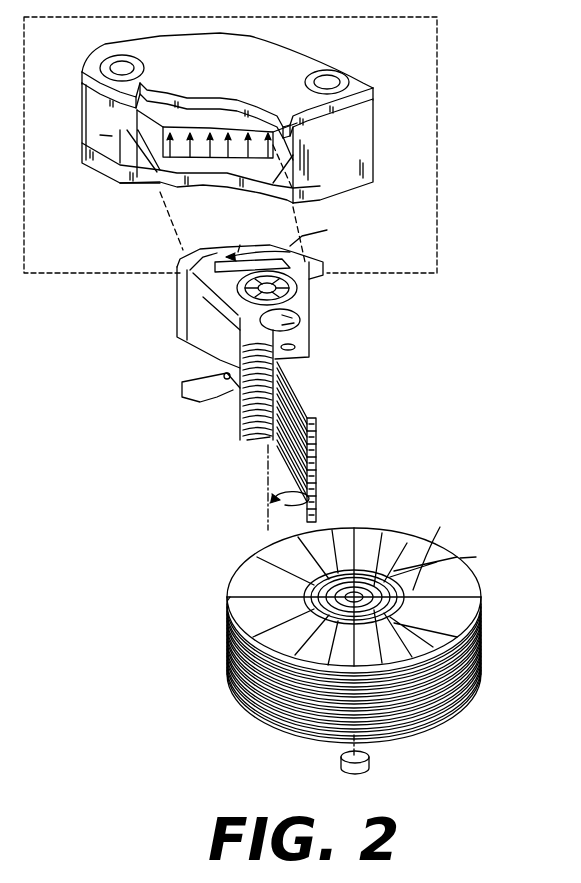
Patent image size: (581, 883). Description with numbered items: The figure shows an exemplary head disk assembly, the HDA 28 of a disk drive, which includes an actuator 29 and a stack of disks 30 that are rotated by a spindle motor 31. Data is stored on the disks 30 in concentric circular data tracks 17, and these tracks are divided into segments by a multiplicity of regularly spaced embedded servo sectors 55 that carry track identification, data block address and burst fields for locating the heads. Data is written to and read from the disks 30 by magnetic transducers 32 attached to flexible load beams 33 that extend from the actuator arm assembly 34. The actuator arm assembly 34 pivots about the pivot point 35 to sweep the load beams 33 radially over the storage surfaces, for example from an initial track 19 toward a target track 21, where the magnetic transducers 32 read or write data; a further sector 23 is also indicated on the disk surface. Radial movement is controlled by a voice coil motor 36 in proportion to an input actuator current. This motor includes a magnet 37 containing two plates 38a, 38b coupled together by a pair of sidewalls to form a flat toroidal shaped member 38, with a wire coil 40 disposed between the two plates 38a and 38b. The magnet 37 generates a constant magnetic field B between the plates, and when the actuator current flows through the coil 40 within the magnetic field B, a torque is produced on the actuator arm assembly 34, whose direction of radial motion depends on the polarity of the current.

The data tracks 17 is at (372, 567).
The initial track 19 is at (444, 553).
The target track 21 is at (481, 557).
The data sector 23 is at (392, 568).
The HDA 28 is at (412, 340).
The actuator 29 is at (72, 330).
The disks 30 is at (378, 717).
The spindle motor 31 is at (342, 762).
The magnetic transducers 32 is at (317, 425).
The flexible load beams 33 is at (309, 385).
The actuator arm assembly 34 is at (307, 330).
The pivot point 35 is at (292, 288).
The voice coil motor 36 is at (438, 129).
The magnet 37 is at (300, 38).
The flat toroidal shaped member 38 is at (365, 137).
The plate 38a is at (198, 118).
The plate 38b is at (193, 177).
The wire coil 40 is at (202, 262).
The servo sectors 55 is at (228, 600).
The magnetic field B is at (100, 135).